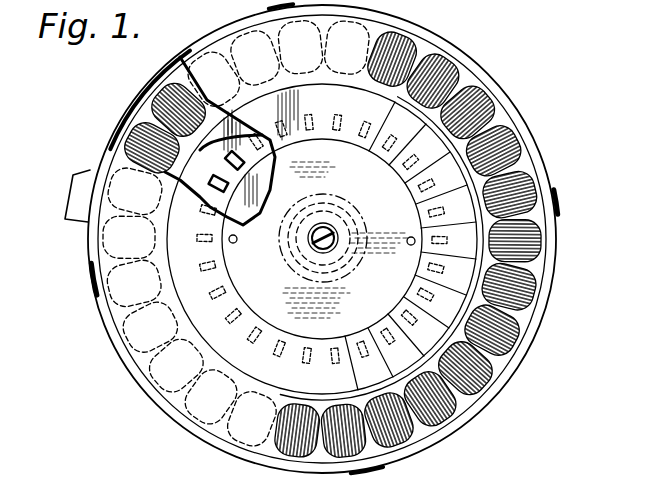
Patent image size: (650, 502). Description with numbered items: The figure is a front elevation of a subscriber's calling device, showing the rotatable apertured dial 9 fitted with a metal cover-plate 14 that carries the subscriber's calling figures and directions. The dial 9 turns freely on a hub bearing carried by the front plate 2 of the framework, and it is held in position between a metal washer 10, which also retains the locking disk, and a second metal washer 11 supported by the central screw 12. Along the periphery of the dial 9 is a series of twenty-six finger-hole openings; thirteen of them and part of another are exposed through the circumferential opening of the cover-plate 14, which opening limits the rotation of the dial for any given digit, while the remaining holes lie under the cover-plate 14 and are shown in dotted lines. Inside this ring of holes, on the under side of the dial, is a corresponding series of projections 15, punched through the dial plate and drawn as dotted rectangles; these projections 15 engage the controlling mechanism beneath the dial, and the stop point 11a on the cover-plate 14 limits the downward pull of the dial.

The front plate 2 is at (128, 118).
The dial 9 is at (530, 220).
The metal washer 10 is at (332, 253).
The metal washer 11 is at (303, 254).
The cover plate 11a is at (220, 275).
The screw 12 is at (338, 230).
The cover-plate 14 is at (110, 314).
The projections 15 is at (236, 162).